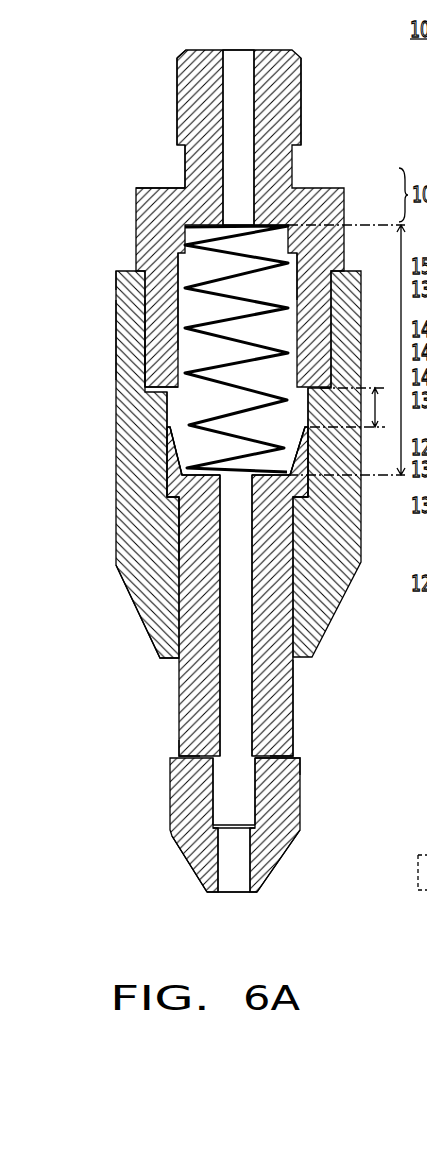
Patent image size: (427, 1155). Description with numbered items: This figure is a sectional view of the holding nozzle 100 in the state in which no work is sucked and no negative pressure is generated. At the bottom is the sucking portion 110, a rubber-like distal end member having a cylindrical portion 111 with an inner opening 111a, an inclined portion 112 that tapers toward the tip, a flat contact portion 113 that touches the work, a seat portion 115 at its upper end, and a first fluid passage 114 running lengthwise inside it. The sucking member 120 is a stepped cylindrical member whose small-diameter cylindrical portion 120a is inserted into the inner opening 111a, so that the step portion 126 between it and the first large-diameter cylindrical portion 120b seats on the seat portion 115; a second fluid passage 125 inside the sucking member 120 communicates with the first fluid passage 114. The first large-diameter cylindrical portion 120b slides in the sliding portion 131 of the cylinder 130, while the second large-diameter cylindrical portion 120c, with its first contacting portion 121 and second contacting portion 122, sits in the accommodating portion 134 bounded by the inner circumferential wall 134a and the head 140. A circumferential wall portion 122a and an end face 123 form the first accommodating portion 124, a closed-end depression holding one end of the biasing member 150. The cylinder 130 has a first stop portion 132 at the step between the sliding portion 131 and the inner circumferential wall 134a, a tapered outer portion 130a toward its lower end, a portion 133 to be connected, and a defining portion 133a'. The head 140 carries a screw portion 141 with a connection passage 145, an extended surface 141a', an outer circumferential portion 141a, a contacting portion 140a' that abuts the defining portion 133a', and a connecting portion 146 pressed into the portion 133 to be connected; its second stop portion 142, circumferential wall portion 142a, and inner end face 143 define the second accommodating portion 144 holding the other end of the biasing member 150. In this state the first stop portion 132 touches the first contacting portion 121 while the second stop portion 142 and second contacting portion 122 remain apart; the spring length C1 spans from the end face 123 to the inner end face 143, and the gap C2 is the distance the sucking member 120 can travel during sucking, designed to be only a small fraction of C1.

The holding nozzle 100 is at (132, 51).
The sucking portion 110 is at (180, 800).
The cylindrical portion 111 is at (297, 797).
The inner opening 111a is at (256, 827).
The inclined portion 112 is at (285, 856).
The contact portion 113 is at (252, 892).
The first fluid passage 114 is at (226, 866).
The seat portion 115 is at (294, 744).
The sucking member 120 is at (180, 698).
The small-diameter cylindrical portion 120a is at (298, 767).
The first large-diameter cylindrical portion 120b is at (294, 700).
The second large-diameter cylindrical portion 120c is at (300, 498).
The first contacting portion 121 is at (303, 502).
The second contacting portion 122 is at (168, 438).
The circumferential wall portion 122a is at (165, 430).
The end face 123 is at (170, 468).
The first accommodating portion 124 is at (285, 456).
The second fluid passage 125 is at (235, 613).
The step portion 126 is at (173, 760).
The cylinder 130 is at (348, 272).
The housing tapered portion 130a is at (163, 658).
The sliding portion 131 is at (175, 520).
The first stop portion 132 is at (167, 490).
The portion to be connected 133 is at (163, 308).
The defining portion 133a' is at (83, 253).
The accommodating portion 134 is at (170, 395).
The inner circumferential wall 134a is at (170, 400).
The head 140 is at (322, 207).
The contacting portion 140a' is at (270, 277).
The screw portion 141 is at (177, 89).
The outer circumferential portion 141a is at (128, 178).
The extended surface 141a' is at (141, 162).
The second stop portion 142 is at (145, 392).
The circumferential wall portion 142a is at (148, 363).
The inner end face 143 is at (185, 237).
The second accommodating portion 144 is at (190, 315).
The connection passage 145 is at (237, 62).
The connecting portion 146 is at (150, 365).
The biasing member 150 is at (190, 283).
The total length of biasing member C1 is at (346, 350).
The moving distance C2 is at (353, 407).